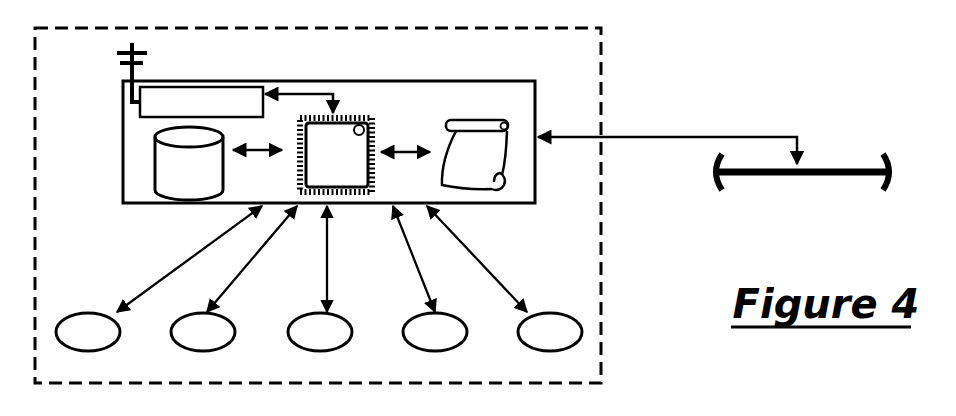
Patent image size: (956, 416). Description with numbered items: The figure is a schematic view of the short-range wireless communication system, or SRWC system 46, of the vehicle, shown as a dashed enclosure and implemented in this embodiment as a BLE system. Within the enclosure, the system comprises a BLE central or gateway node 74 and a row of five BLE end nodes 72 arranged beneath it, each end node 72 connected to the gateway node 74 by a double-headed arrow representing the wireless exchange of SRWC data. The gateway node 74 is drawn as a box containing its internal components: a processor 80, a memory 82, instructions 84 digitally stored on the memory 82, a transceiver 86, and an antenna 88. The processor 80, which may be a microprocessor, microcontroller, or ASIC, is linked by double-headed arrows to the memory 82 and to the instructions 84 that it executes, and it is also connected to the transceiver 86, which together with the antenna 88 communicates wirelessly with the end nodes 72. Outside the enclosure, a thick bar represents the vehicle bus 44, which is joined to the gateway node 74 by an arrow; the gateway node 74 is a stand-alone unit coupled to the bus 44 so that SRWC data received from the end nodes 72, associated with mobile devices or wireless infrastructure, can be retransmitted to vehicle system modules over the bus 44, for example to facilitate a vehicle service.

The bus 44 is at (846, 163).
The SRWC system 46 is at (604, 37).
The BLE end nodes 72 is at (319, 278).
The gateway node 74 is at (395, 80).
The processor 80 is at (336, 155).
The memory 82 is at (189, 163).
The instructions 84 is at (475, 155).
The transceiver 86 is at (201, 102).
The antenna 88 is at (134, 77).